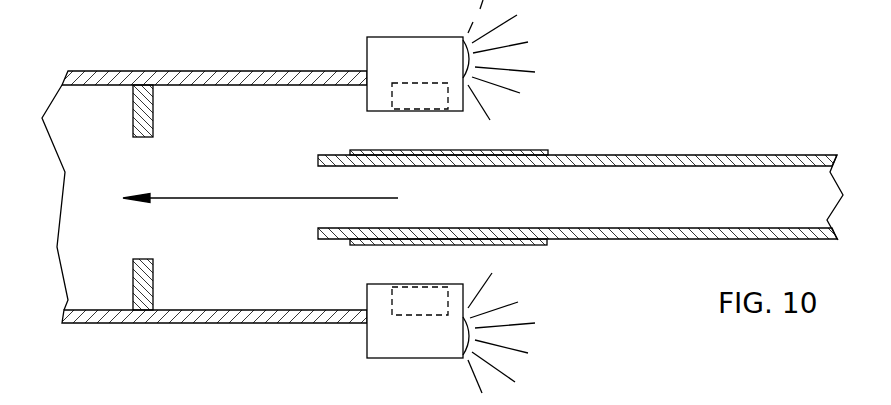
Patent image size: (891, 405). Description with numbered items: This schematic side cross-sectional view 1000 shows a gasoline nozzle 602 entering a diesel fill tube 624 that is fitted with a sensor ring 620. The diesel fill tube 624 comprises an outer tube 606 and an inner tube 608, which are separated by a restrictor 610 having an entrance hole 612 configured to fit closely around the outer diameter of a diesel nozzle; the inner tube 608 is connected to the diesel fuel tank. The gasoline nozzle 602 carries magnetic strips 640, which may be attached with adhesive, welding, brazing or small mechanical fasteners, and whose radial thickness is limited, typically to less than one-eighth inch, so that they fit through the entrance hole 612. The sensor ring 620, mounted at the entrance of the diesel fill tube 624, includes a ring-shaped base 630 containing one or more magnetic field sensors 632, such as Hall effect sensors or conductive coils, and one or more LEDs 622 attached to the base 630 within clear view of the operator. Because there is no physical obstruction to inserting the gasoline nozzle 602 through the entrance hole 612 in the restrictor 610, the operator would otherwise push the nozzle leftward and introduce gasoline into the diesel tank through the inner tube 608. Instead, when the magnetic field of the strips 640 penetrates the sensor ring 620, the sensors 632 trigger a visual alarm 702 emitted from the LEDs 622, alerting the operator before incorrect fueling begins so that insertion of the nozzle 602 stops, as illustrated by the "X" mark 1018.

The schematic side cross-sectional view 1000 is at (732, 61).
The gasoline nozzle 602 is at (713, 162).
The outer tube 606 is at (273, 317).
The inner tube 608 is at (100, 317).
The restrictor 610 is at (147, 292).
The entrance hole 612 is at (145, 162).
The sensor ring 620 is at (388, 98).
The LEDs or lights 622 is at (470, 62).
The diesel fill tube 624 is at (443, 262).
The ring-shaped base 630 is at (438, 37).
The magnetic field sensors 632 is at (412, 95).
The magnetic strips 640 is at (535, 152).
The visual alarm 702 is at (523, 325).
The "X" mark 1018 is at (210, 215).